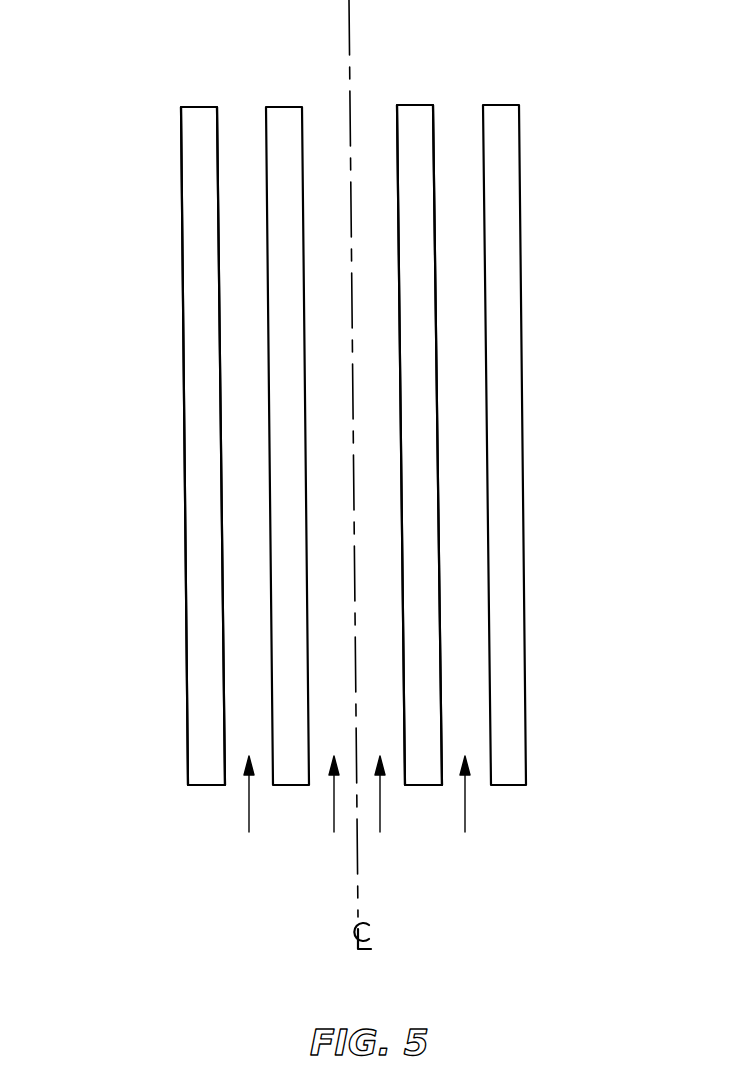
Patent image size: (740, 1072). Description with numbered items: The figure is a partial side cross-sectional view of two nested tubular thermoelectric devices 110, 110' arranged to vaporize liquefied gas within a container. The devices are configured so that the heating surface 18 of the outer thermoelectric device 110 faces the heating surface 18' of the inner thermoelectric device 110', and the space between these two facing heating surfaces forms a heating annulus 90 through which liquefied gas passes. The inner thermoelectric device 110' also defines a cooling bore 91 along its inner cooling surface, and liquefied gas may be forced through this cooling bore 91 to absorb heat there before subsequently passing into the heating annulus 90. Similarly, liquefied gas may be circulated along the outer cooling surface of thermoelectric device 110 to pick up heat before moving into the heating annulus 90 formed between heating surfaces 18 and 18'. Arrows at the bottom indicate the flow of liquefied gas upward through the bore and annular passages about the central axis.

The heating surface 18 is at (204, 399).
The heating surface 18' is at (279, 399).
The heating annulus 90 is at (248, 520).
The cooling bore 91 is at (380, 448).
The tubular thermoelectric device 110 is at (562, 438).
The tubular thermoelectric device 110' is at (456, 401).